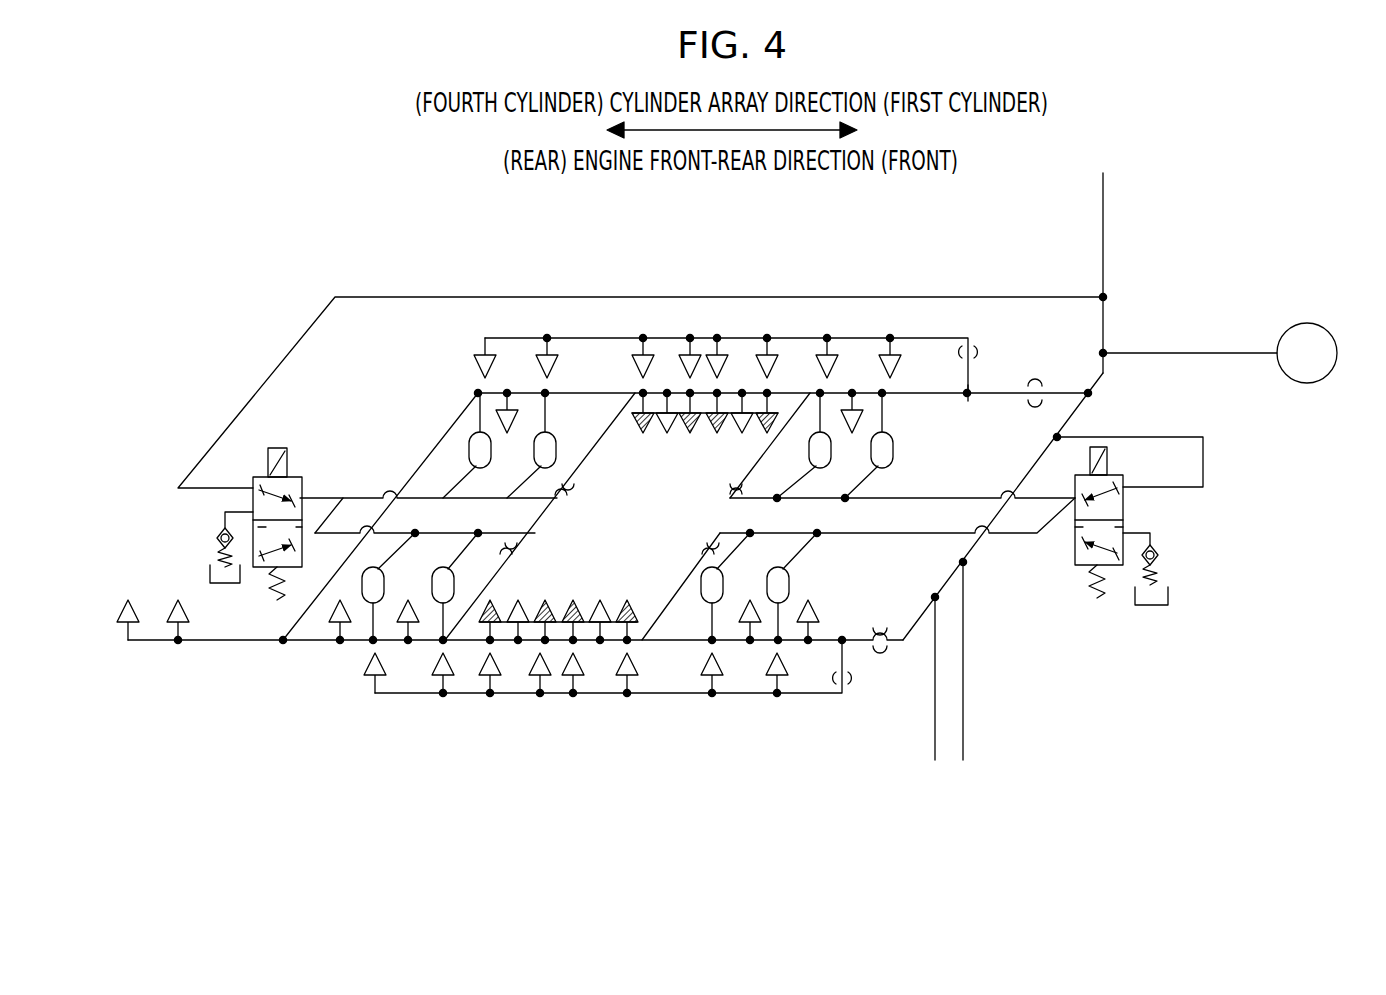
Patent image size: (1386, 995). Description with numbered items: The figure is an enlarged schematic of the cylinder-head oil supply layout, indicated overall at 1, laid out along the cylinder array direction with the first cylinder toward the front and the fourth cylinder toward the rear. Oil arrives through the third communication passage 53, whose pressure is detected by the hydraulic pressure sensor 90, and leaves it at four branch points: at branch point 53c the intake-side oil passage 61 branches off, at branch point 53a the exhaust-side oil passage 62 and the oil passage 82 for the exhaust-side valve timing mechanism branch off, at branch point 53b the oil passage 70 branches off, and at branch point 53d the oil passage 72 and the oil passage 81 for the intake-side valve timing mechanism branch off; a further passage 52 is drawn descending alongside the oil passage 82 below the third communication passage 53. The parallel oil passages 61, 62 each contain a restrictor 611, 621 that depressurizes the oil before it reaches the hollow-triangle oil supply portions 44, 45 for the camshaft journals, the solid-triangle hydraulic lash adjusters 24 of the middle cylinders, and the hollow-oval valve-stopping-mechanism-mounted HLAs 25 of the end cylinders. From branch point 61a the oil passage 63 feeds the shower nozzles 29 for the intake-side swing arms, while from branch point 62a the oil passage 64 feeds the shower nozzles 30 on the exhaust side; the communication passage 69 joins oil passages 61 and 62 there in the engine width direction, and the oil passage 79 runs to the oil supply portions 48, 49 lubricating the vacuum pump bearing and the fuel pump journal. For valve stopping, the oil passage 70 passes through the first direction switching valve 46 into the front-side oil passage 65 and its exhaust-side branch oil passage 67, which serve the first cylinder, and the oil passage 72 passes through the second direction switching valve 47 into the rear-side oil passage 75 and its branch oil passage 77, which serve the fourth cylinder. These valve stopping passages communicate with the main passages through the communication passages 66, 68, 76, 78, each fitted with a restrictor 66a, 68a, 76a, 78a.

The engine lubrication system 1 is at (199, 270).
The hydraulic lash adjuster 24 is at (772, 405).
The valve-stopping-mechanism-mounted HLA 25 is at (468, 440).
The shower nozzle 29 is at (475, 365).
The shower nozzle 30 is at (368, 662).
The oil supply portion 44 is at (475, 405).
The oil supply portion 45 is at (330, 608).
The first direction switching valve 46 is at (1142, 505).
The second direction switching valve 47 is at (205, 525).
The oil supply portion 48 is at (178, 600).
The oil supply portion 49 is at (125, 600).
The oil passage 52 is at (966, 690).
The third communication passage 53 is at (975, 552).
The branch point 53a is at (958, 580).
The branch point 53b is at (1050, 440).
The branch point 53c is at (1092, 395).
The branch point 53d is at (1105, 297).
The oil passage 61 is at (912, 399).
The branch point 61a is at (984, 419).
The restrictor 611 is at (1036, 387).
The oil passage 62 is at (897, 648).
The branch point 62a is at (283, 646).
The restrictor 621 is at (880, 630).
The oil passage 63 is at (585, 338).
The oil passage 64 is at (405, 695).
The oil passage 65 is at (880, 498).
The communication passage 66 is at (760, 450).
The restrictor 66a is at (730, 491).
The oil passage 67 is at (870, 533).
The communication passage 68 is at (682, 588).
The restrictor 68a is at (710, 552).
The communication passage 69 is at (432, 452).
The oil passage 70 is at (1203, 455).
The oil passage 72 is at (398, 297).
The oil passage 75 is at (325, 498).
The communication passage 76 is at (603, 440).
The restrictor 76a is at (572, 492).
The oil passage 77 is at (350, 527).
The communication passage 78 is at (500, 540).
The restrictor 78a is at (530, 553).
The oil passage 79 is at (228, 645).
The oil passage 81 is at (1105, 245).
The oil passage 82 is at (935, 740).
The hydraulic pressure sensor 90 is at (1322, 328).